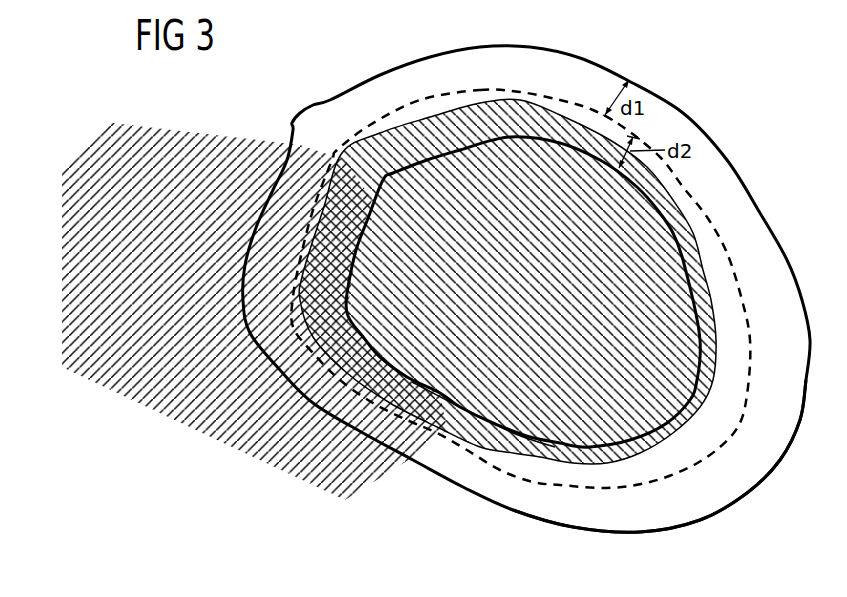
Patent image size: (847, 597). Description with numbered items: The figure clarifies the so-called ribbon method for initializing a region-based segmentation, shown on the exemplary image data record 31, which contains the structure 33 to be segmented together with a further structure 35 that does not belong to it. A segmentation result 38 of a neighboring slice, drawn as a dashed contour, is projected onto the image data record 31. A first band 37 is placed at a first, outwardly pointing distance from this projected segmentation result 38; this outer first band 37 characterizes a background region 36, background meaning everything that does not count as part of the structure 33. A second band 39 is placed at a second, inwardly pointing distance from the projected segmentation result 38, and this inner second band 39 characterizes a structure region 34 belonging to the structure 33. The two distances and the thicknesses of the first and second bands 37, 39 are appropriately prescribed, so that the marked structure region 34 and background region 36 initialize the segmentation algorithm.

The image data record 31 is at (265, 96).
The structure to be segmented 33 is at (514, 106).
The structure region 34 is at (677, 240).
The further structure 35 is at (95, 378).
The background region 36 is at (753, 490).
The first band 37 is at (683, 113).
The segmentation result of a neighboring slice 38 is at (618, 490).
The second band 39 is at (558, 443).